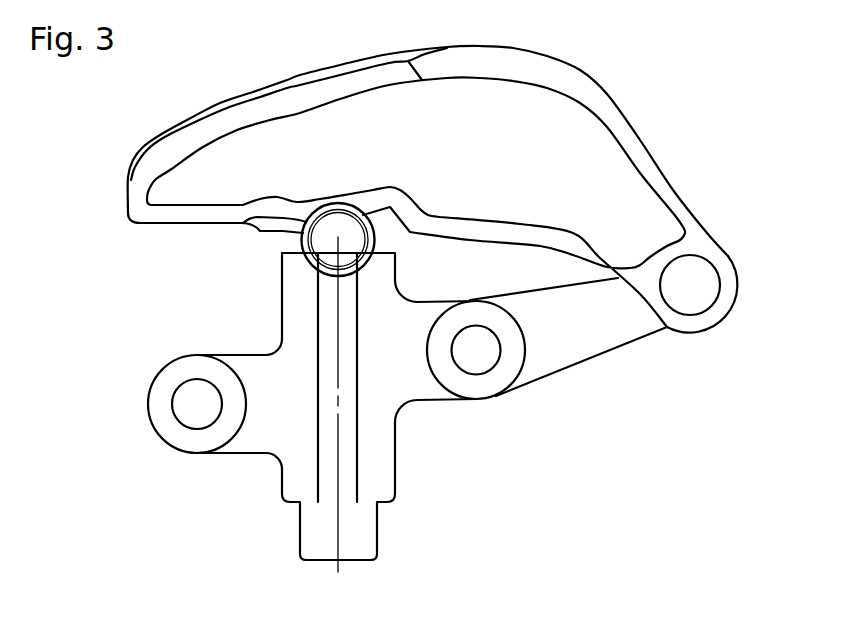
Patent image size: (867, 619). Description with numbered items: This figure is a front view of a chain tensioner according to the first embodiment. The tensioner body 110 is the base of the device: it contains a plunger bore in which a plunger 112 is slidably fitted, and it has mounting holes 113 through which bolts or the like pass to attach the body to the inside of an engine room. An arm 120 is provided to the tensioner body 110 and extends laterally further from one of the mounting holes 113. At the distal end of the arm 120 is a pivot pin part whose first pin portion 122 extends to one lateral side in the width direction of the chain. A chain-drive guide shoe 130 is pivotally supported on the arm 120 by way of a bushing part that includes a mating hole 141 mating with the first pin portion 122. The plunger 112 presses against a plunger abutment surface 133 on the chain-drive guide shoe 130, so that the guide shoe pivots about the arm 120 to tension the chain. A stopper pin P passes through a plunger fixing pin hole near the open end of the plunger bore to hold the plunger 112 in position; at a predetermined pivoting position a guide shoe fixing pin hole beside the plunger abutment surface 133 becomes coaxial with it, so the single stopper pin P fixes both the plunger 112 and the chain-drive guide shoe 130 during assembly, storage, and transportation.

The tensioner body 110 is at (373, 397).
The plunger 112 is at (297, 230).
The mounting holes 113 is at (205, 421).
The arm 120 is at (573, 330).
The first pin portion 122 is at (697, 290).
The chain-drive guide shoe 130 is at (660, 165).
The plunger abutment surface 133 is at (255, 232).
The mating hole 141 is at (712, 270).
The stopper pin P is at (323, 240).